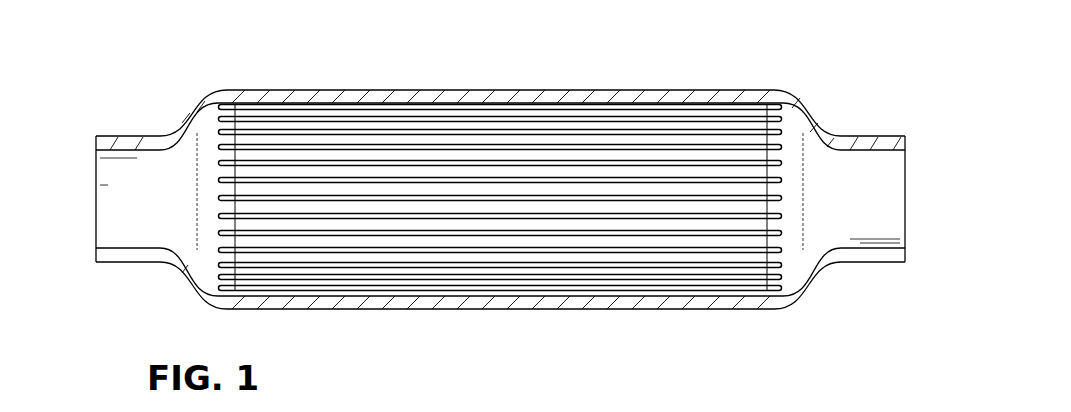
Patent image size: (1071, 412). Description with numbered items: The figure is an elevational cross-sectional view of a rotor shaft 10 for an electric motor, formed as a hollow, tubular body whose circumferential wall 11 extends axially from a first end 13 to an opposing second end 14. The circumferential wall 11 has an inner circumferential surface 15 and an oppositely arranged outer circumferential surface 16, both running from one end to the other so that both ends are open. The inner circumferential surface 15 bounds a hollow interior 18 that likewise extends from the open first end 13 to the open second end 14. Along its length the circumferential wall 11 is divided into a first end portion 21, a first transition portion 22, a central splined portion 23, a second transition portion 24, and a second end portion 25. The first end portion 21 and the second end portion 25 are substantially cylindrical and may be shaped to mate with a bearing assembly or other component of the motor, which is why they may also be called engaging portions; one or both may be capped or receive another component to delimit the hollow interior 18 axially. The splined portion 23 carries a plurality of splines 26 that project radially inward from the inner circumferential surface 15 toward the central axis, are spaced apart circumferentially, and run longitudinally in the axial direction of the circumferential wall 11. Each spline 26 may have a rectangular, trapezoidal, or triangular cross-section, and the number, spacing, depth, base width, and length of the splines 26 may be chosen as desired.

The rotor shaft 10 is at (176, 70).
The circumferential wall 11 is at (296, 95).
The first end 13 is at (905, 141).
The second end 14 is at (96, 143).
The inner circumferential surface 15 is at (870, 150).
The outer circumferential surface 16 is at (862, 136).
The hollow interior 18 is at (133, 211).
The first end portion 21 is at (878, 275).
The first transition portion 22 is at (818, 291).
The splined portion 23 is at (500, 321).
The second transition portion 24 is at (183, 293).
The second end portion 25 is at (114, 272).
The splines 26 is at (432, 160).